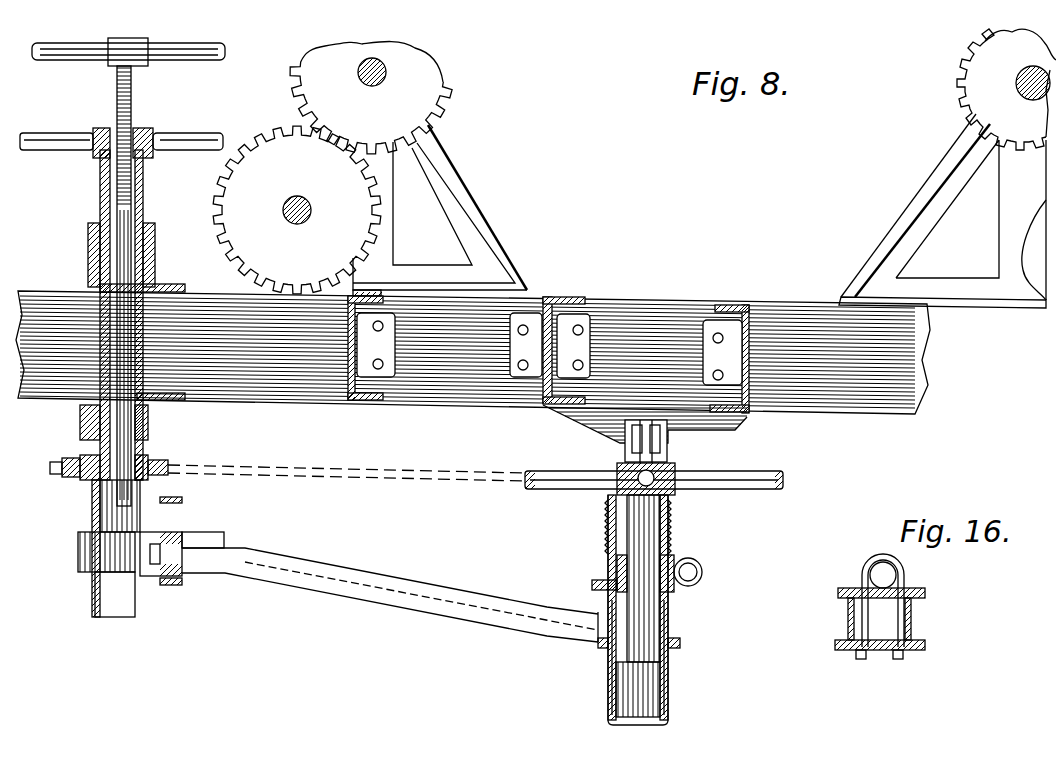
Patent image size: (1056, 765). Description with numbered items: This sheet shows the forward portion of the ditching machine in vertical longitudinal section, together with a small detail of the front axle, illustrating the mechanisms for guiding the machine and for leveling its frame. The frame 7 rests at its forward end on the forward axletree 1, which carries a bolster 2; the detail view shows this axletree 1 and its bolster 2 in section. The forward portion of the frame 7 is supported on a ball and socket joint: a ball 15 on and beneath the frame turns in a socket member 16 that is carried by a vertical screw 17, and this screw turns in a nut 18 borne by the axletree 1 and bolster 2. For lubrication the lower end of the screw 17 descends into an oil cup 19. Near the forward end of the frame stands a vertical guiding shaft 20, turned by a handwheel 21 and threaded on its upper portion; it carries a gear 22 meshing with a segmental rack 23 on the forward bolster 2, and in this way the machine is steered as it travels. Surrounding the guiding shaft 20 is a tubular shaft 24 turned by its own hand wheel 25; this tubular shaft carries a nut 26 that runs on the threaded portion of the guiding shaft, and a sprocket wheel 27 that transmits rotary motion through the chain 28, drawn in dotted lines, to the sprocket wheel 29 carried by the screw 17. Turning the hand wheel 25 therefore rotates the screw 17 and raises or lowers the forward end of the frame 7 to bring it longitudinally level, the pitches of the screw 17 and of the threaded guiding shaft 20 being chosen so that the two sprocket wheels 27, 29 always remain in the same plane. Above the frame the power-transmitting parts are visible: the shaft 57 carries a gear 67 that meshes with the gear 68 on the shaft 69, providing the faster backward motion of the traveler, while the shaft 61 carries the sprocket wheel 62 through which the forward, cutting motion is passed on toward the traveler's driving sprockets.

In FIG. 8, the forward axletree 1 is at (704, 572).
In FIG. 16, the forward axletree 1 is at (900, 572).
In FIG. 8, the bolster 2 is at (612, 608).
In FIG. 16, the bolster 2 is at (910, 618).
In FIG. 8, the frame 7 is at (473, 345).
In FIG. 8, the ball 15 is at (628, 505).
In FIG. 8, the socket member 16 is at (668, 495).
In FIG. 8, the vertical screw 17 is at (672, 532).
In FIG. 8, the nut 18 is at (617, 572).
In FIG. 8, the oil cup 19 is at (622, 696).
In FIG. 8, the guiding shaft 20 is at (117, 95).
In FIG. 8, the handwheel 21 is at (150, 60).
In FIG. 8, the gear 22 is at (92, 555).
In FIG. 8, the segmental rack 23 is at (140, 558).
In FIG. 8, the tubular shaft 24 is at (90, 400).
In FIG. 8, the hand wheel 25 is at (208, 132).
In FIG. 8, the nut 26 is at (140, 130).
In FIG. 8, the sprocket wheel 27 is at (64, 476).
In FIG. 8, the chain 28 is at (346, 462).
In FIG. 8, the sprocket wheel 29 is at (780, 472).
In FIG. 8, the shaft 57 is at (373, 58).
In FIG. 8, the shaft 61 is at (1015, 78).
In FIG. 8, the sprocket wheel 62 is at (985, 85).
In FIG. 8, the gear 67 is at (436, 80).
In FIG. 8, the gear 68 is at (297, 210).
In FIG. 8, the shaft 69 is at (296, 224).